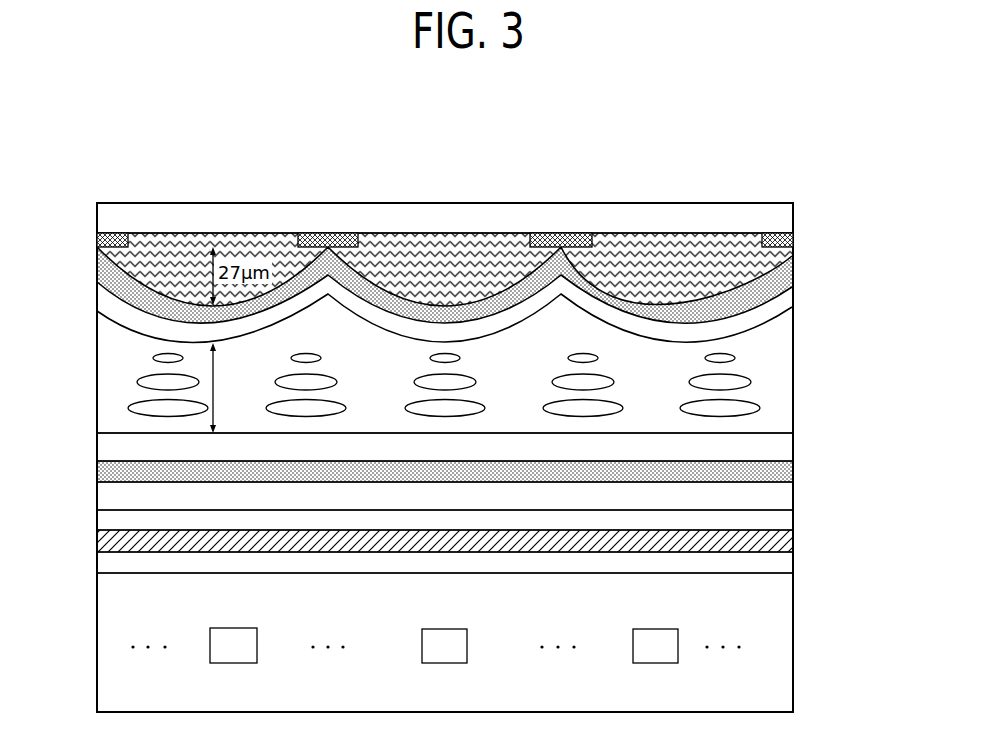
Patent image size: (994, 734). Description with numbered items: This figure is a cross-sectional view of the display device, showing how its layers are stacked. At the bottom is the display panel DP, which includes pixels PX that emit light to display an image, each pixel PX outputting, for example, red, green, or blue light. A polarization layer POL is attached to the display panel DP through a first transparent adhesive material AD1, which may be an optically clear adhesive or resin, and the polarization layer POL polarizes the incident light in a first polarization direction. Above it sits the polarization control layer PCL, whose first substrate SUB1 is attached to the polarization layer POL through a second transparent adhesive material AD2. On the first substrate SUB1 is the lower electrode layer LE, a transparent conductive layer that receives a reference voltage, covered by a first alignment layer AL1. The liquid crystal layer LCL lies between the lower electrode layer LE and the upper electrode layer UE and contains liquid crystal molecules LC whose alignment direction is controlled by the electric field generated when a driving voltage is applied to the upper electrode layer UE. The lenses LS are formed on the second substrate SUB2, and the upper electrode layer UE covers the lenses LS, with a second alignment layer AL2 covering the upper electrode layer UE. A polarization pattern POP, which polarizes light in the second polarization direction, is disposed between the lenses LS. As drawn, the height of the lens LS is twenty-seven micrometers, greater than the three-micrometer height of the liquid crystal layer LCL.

The second substrate SUB2 is at (793, 217).
The polarization pattern POP is at (99, 240).
The lens LS is at (777, 259).
The upper electrode layer UE is at (777, 287).
The second alignment layer AL2 is at (777, 312).
The liquid crystal molecules LC is at (128, 407).
The liquid crystal layer LCL is at (442, 394).
The polarization control layer PCL is at (473, 378).
The first alignment layer AL1 is at (785, 445).
The lower electrode layer LE is at (785, 471).
The first substrate SUB1 is at (480, 496).
The second transparent adhesive material AD2 is at (785, 522).
The polarization layer POL is at (785, 548).
The first transparent adhesive material AD1 is at (785, 574).
The display panel DP is at (468, 642).
The pixel PX is at (444, 645).